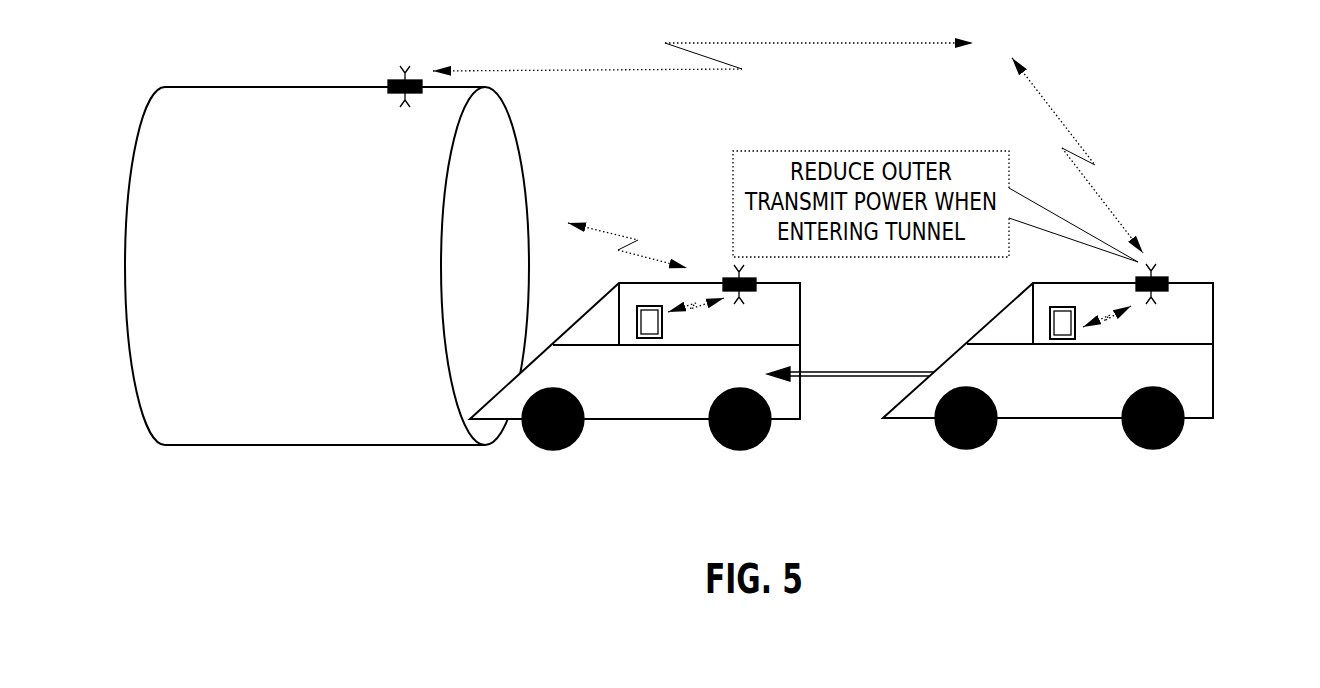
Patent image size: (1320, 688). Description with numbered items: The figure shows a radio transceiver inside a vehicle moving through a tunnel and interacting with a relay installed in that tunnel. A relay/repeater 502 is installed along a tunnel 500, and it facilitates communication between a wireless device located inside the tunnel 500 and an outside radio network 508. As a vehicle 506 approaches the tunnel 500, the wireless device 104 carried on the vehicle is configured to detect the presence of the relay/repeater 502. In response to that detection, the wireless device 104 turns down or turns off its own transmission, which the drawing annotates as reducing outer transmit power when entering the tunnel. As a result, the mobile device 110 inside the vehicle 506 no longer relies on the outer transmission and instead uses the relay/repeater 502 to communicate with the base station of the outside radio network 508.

The tunnel 500 is at (193, 86).
The relay/repeater 502 is at (395, 75).
The outside radio network 508 is at (1022, 45).
The wireless device 104 is at (1202, 277).
The mobile device 110 is at (706, 339).
The vehicle 506 is at (1213, 385).